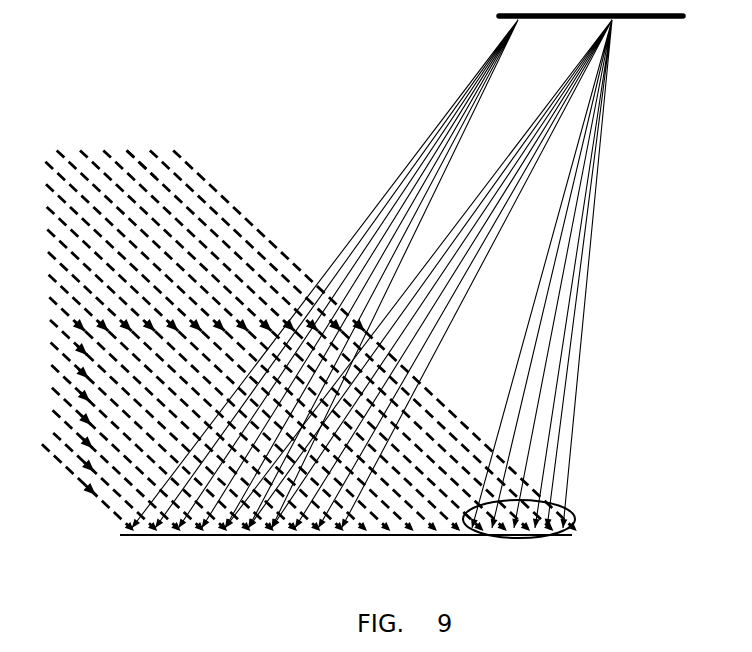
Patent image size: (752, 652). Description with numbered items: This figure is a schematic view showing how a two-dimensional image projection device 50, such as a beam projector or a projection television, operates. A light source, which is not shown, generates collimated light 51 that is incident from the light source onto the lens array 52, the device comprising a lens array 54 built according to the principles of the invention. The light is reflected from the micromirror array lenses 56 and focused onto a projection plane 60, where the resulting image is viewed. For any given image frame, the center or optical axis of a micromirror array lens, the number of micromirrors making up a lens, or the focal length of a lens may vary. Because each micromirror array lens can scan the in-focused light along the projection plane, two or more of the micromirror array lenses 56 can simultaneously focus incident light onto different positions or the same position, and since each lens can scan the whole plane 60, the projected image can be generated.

The two-dimensional image projection device 50 is at (318, 110).
The collimated light 51 is at (183, 210).
The lens array 52 is at (113, 528).
The lens array 54 is at (547, 500).
The micromirror array lenses 56 is at (558, 527).
The projection plane 60 is at (497, 18).